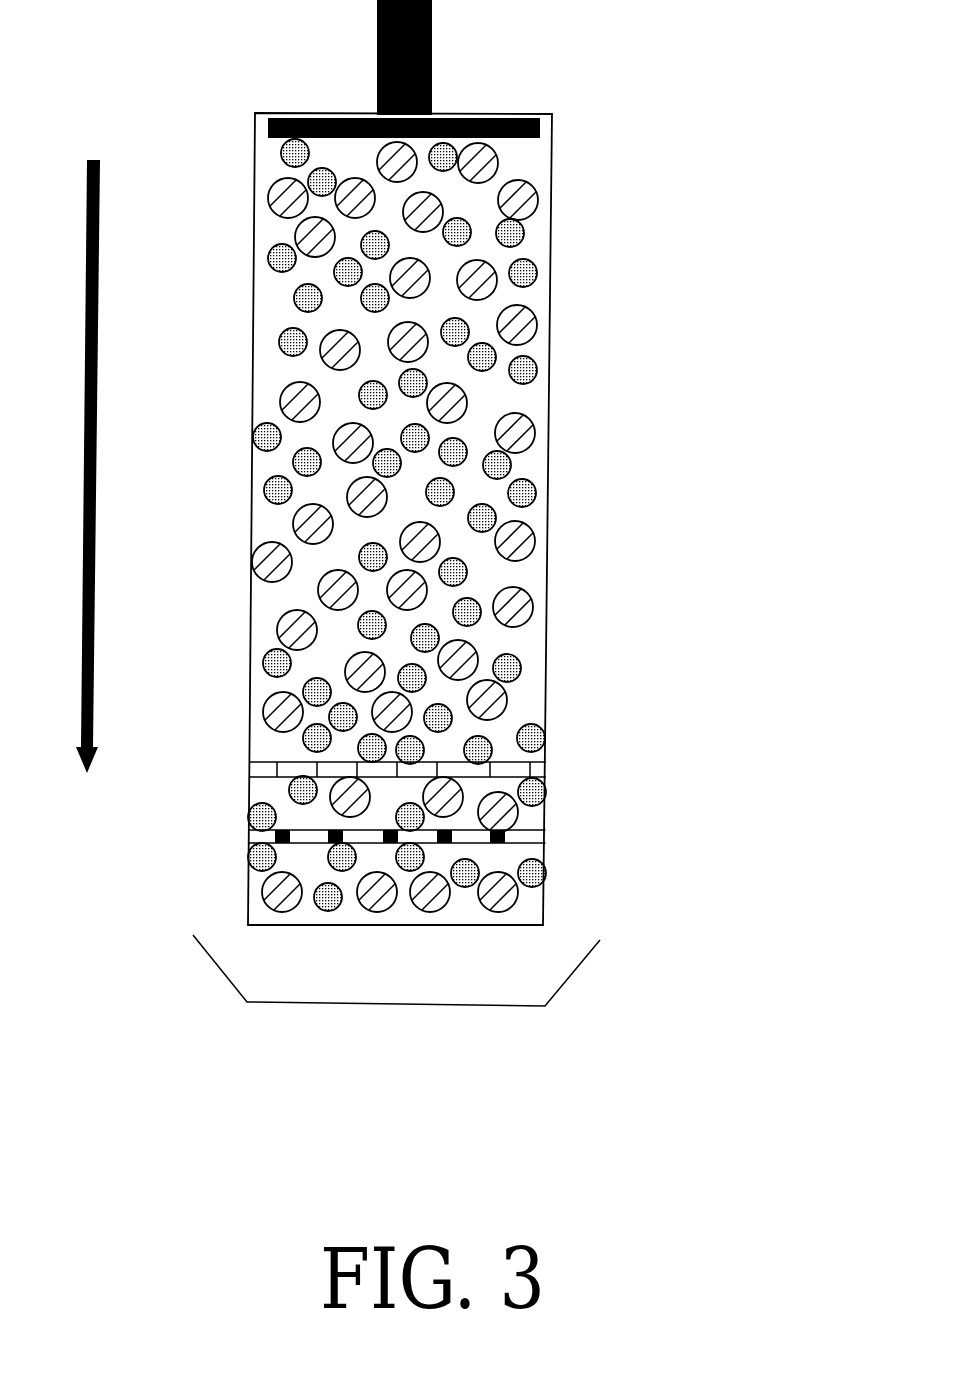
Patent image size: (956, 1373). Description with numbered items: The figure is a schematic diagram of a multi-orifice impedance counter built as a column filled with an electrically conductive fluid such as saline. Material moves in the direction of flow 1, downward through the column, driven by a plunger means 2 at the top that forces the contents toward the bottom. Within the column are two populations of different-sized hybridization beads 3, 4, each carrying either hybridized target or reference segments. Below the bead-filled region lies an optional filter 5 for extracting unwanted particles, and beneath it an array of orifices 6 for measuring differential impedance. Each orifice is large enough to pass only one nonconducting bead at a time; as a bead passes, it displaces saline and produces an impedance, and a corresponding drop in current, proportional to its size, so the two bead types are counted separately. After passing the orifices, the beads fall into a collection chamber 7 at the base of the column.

The direction of flow 1 is at (89, 430).
The plunger means 2 is at (440, 4).
The hybridization beads 3 is at (558, 276).
The hybridization beads 4 is at (545, 439).
The optional filter 5 is at (554, 782).
The array of orifices 6 is at (554, 849).
The collection chamber 7 is at (396, 970).